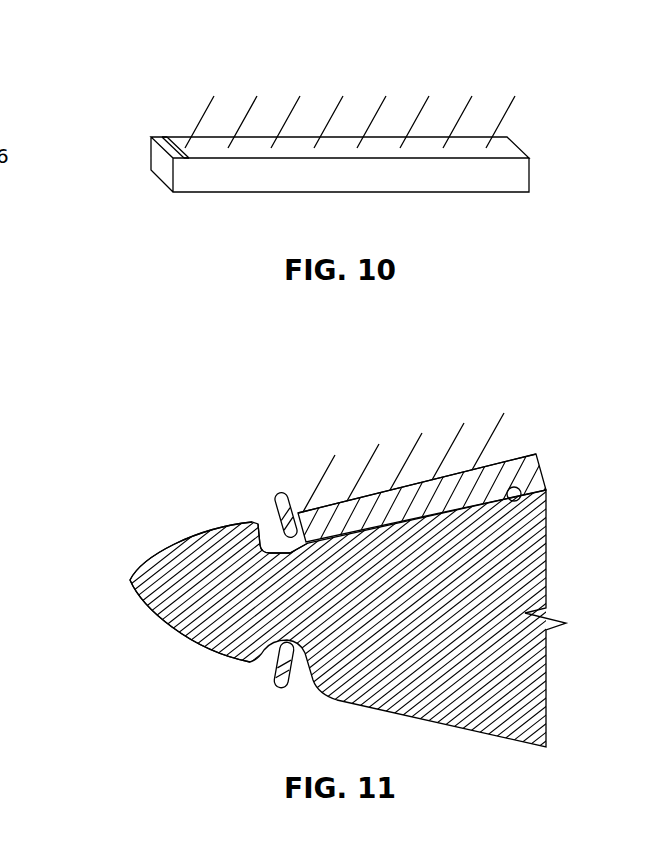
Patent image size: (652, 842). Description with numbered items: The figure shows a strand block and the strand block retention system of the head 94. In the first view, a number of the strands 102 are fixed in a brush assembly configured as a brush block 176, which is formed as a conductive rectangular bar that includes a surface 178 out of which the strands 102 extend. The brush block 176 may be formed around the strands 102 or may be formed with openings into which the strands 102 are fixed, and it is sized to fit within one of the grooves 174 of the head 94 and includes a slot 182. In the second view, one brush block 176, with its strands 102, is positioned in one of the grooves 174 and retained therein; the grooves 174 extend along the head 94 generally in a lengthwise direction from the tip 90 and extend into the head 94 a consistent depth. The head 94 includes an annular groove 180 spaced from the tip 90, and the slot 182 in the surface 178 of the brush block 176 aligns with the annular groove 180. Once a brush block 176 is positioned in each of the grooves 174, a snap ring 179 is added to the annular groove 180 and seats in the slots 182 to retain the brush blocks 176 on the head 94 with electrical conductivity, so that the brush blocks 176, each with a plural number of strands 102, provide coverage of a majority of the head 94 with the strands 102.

In FIG. 11, the tip 90 is at (128, 582).
In FIG. 11, the head 94 is at (414, 640).
In FIG. 10, the strands 102 is at (380, 108).
In FIG. 11, the strands 102 is at (488, 435).
In FIG. 11, the grooves 174 is at (507, 500).
In FIG. 10, the brush block 176 is at (530, 174).
In FIG. 11, the brush block 176 is at (542, 483).
In FIG. 10, the surface 178 is at (163, 139).
In FIG. 11, the surface 178 is at (520, 457).
In FIG. 11, the snap ring 179 is at (277, 497).
In FIG. 11, the annular groove 180 is at (275, 659).
In FIG. 10, the slot 182 is at (186, 163).
In FIG. 11, the slot 182 is at (267, 518).